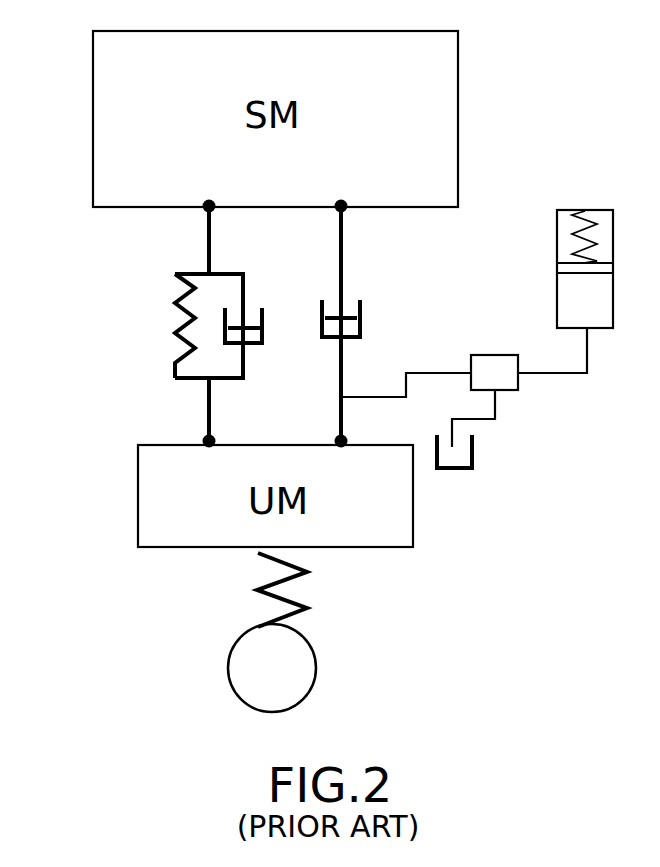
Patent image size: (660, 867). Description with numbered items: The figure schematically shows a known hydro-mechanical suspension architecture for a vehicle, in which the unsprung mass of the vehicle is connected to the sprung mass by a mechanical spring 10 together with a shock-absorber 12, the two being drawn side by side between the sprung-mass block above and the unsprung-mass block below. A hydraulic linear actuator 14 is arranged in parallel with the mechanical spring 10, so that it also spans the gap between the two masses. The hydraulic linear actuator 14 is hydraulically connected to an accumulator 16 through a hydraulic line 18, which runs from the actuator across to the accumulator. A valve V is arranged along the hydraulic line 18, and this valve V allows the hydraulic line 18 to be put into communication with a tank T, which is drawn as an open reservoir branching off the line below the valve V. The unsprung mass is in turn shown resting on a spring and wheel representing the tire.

The mechanical spring 10 is at (182, 325).
The shock-absorber 12 is at (262, 333).
The hydraulic linear actuator 14 is at (362, 323).
The accumulator 16 is at (614, 292).
The hydraulic line 18 is at (563, 373).
The valve V is at (502, 355).
The tank T is at (477, 463).